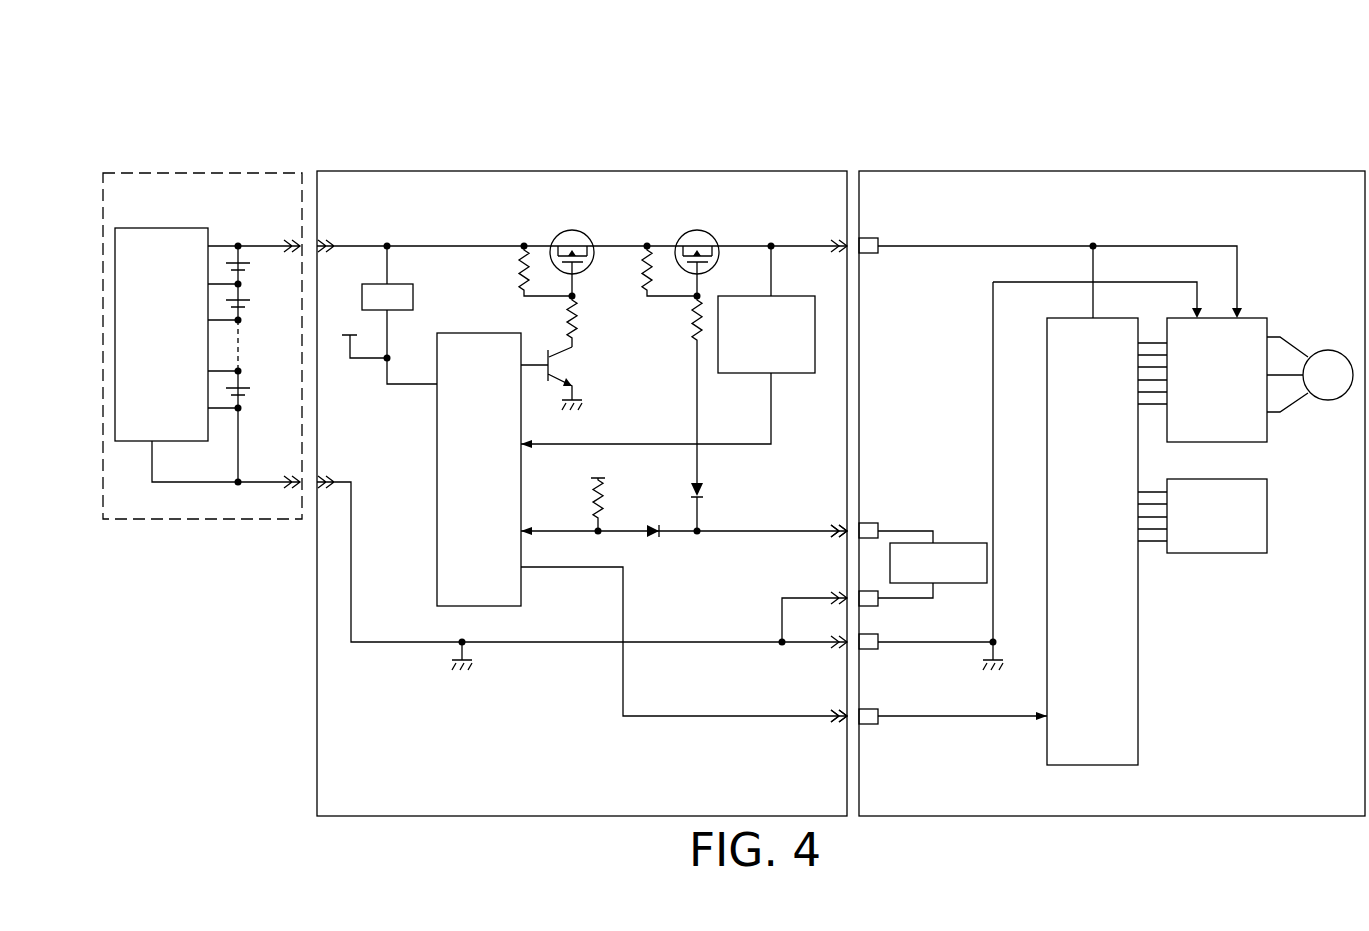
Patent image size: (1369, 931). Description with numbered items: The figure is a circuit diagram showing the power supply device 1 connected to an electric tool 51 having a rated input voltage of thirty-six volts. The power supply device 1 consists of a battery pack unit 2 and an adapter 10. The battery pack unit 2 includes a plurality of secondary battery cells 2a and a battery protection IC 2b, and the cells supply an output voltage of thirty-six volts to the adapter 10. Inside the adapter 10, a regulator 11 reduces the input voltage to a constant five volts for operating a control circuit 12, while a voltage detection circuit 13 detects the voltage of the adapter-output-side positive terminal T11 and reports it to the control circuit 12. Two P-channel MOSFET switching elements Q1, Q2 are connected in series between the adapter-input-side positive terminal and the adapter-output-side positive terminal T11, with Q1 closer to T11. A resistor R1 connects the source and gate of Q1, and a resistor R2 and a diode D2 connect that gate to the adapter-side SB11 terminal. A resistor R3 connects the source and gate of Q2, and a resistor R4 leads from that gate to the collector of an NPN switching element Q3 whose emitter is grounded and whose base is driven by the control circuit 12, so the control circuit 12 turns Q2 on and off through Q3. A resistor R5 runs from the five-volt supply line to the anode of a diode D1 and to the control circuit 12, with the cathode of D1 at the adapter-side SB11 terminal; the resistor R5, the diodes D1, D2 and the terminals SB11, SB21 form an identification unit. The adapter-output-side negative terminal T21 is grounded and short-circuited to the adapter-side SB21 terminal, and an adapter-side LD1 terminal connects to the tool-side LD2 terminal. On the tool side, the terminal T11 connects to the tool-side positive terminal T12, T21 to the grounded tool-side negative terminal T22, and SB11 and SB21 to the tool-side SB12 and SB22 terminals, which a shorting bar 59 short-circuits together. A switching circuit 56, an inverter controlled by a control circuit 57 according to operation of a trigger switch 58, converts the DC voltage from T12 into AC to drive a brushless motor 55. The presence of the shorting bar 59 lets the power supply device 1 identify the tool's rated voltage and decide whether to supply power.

The power supply device 1 is at (353, 72).
The battery pack unit 2 is at (254, 172).
The secondary battery cells 2a is at (253, 268).
The battery protection IC 2b is at (140, 228).
The adapter 10 is at (362, 172).
The regulator 11 is at (413, 291).
The control circuit 12 is at (437, 440).
The voltage detection circuit 13 is at (805, 373).
The electric tool 51 is at (1334, 170).
The motor 55 is at (1333, 351).
The switching circuit 56 is at (1258, 318).
The control circuit 57 is at (1138, 700).
The trigger switch 58 is at (1268, 543).
The shorting bar 59 is at (936, 541).
The adapter-output-side positive terminal T11 is at (842, 243).
The tool-side positive terminal T12 is at (878, 238).
The adapter-output-side negative terminal T21 is at (841, 652).
The tool-side negative terminal T22 is at (870, 652).
The adapter-side SB11 terminal SB11 is at (840, 523).
The tool-side SB12 terminal SB12 is at (872, 522).
The adapter-side SB21 terminal SB21 is at (840, 595).
The tool-side SB22 terminal SB22 is at (880, 603).
The adapter-side LD1 terminal LD1 is at (841, 726).
The tool-side LD2 terminal LD2 is at (870, 727).
The switching element Q1 is at (697, 251).
The switching element Q2 is at (572, 251).
The switching element Q3 is at (566, 378).
The resistor R1 is at (654, 271).
The resistor R2 is at (680, 389).
The resistor R3 is at (529, 271).
The resistor R4 is at (589, 321).
The resistor R5 is at (582, 498).
The diode D1 is at (655, 547).
The diode D2 is at (680, 504).